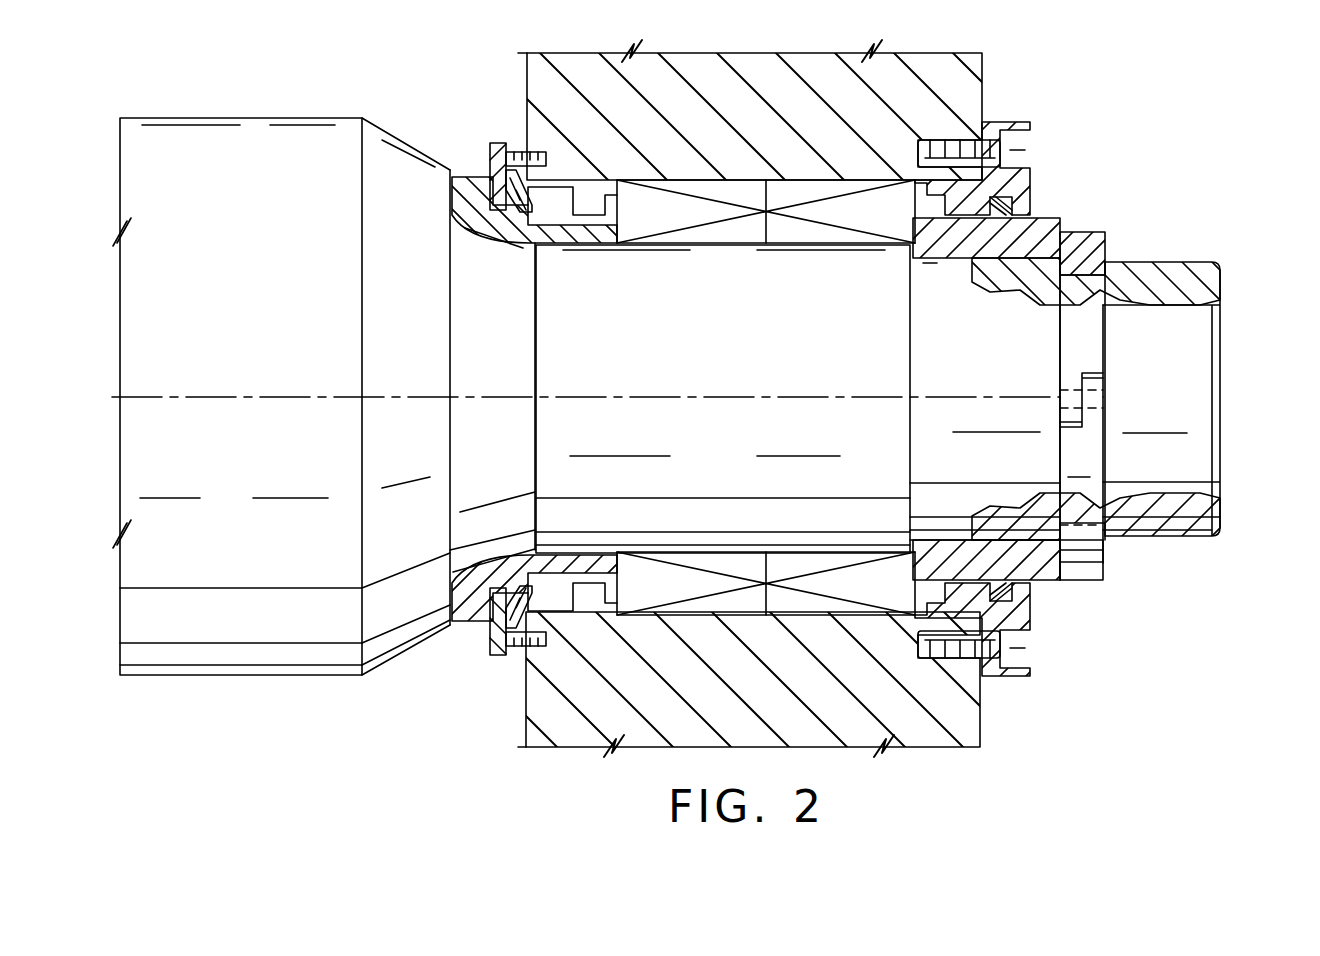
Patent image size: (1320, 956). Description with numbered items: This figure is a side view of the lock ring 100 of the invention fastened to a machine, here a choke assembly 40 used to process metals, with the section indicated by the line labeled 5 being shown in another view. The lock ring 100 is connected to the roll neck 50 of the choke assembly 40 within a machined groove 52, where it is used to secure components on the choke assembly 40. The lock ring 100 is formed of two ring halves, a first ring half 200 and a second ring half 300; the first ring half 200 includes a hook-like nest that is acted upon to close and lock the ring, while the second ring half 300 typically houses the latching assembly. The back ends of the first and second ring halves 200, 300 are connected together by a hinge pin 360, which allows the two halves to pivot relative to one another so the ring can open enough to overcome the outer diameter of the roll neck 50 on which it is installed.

The choke assembly 40 is at (1010, 92).
The lock ring 100 is at (1078, 218).
The machined groove 52 is at (1108, 262).
The roll neck 50 is at (1185, 262).
The first ring half 200 is at (1093, 340).
The second ring half 300 is at (1090, 500).
The hinge pin 360 is at (1100, 392).
The section line 5- 5 is at (1105, 617).